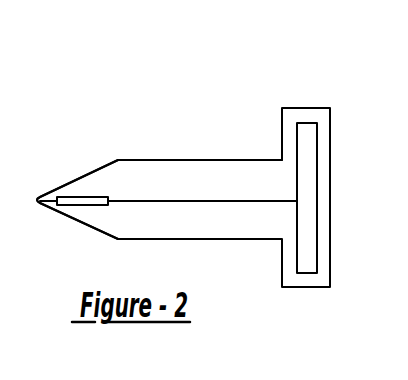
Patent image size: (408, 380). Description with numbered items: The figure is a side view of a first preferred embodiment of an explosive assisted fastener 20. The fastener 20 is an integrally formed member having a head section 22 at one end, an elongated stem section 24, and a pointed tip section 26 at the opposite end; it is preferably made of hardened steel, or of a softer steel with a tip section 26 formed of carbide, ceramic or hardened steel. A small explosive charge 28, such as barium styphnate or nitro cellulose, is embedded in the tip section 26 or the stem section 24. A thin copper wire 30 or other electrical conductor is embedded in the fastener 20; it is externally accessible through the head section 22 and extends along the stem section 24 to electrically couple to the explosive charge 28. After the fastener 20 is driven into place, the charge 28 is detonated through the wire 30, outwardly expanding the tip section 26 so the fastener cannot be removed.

The explosive assisted fastener 20 is at (159, 145).
The head section 22 is at (306, 108).
The stem section 24 is at (200, 160).
The tip section 26 is at (80, 175).
The explosive charge 28 is at (88, 206).
The wire 30 is at (218, 202).